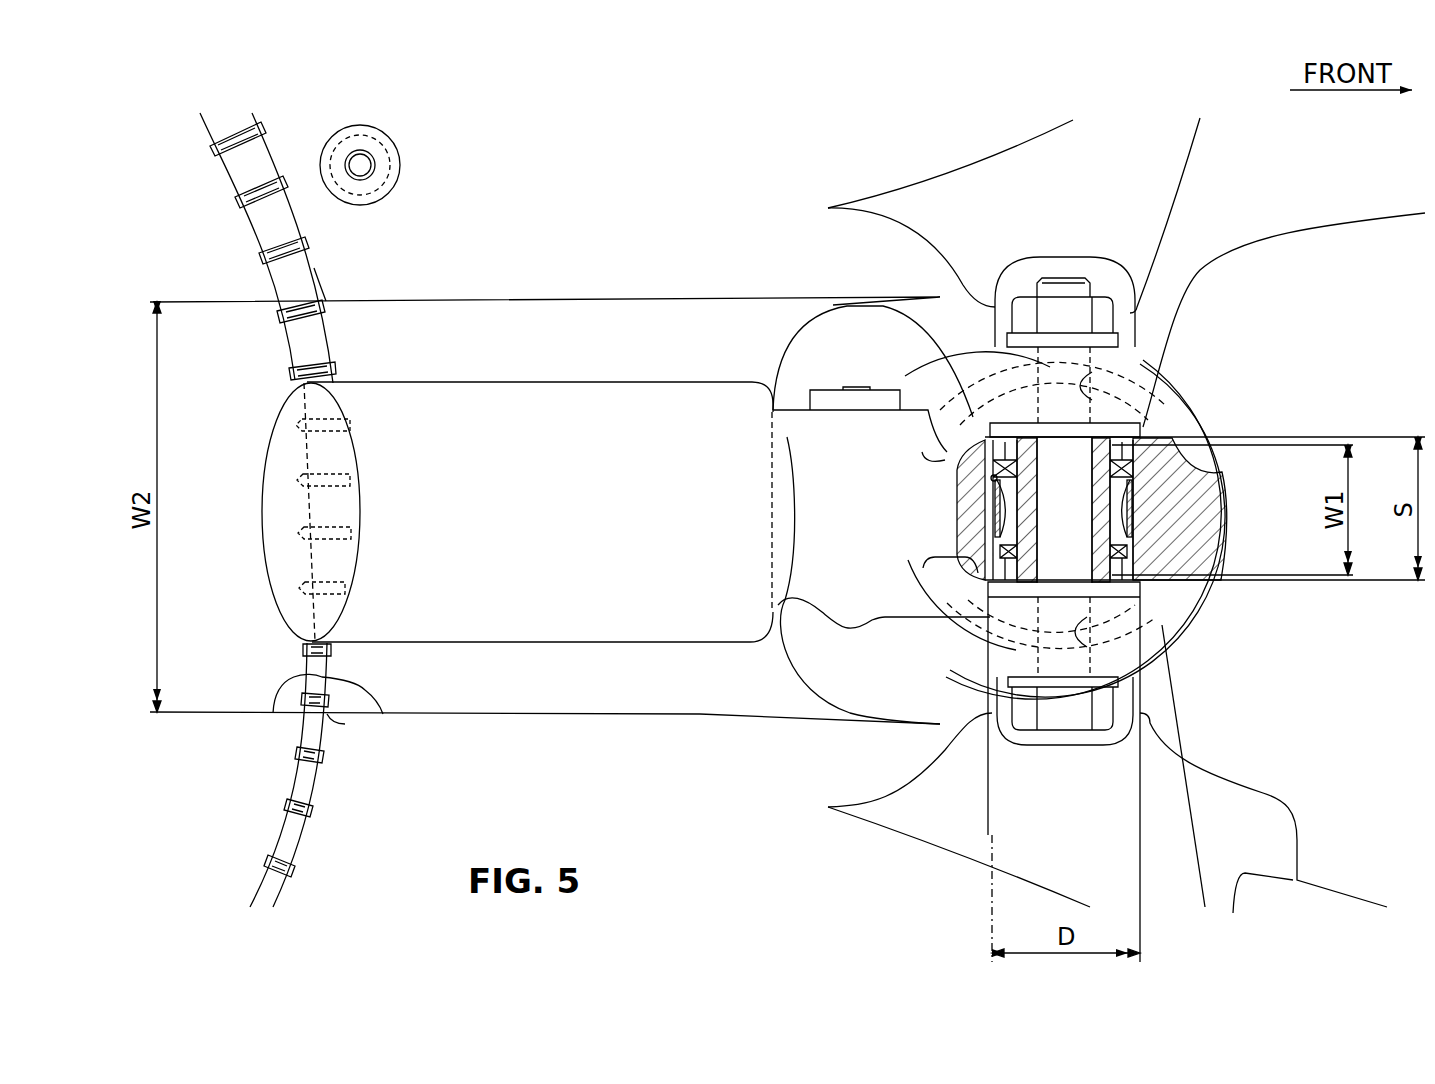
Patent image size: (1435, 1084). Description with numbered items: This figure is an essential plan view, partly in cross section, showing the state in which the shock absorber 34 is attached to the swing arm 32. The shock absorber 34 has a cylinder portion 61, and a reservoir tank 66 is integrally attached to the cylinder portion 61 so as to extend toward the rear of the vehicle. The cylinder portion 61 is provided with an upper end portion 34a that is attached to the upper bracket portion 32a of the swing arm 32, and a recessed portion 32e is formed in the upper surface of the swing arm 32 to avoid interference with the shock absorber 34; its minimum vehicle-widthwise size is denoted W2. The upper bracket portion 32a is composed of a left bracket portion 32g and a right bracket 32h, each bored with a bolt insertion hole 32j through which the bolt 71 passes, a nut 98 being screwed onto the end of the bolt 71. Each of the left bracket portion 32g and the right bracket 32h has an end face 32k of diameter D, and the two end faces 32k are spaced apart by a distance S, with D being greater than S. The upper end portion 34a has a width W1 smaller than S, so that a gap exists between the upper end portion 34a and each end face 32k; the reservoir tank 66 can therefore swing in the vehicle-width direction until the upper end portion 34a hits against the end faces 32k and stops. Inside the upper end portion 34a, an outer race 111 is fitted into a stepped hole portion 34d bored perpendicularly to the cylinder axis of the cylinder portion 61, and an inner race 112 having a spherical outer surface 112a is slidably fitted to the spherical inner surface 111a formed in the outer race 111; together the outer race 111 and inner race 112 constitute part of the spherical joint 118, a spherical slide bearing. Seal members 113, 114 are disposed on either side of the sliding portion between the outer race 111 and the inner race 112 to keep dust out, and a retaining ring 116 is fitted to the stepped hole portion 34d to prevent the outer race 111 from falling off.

The swing arm 32 is at (216, 188).
The upper bracket portion 32a is at (1226, 190).
The recessed portion 32e is at (275, 715).
The left bracket portion 32g is at (963, 200).
The right bracket 32h is at (920, 820).
The bolt insertion hole 32j is at (1100, 380).
The end face 32k is at (1140, 462).
The shock absorber 34 is at (1255, 472).
The upper end portion 34a is at (1235, 490).
The stepped hole portion 34d is at (1171, 514).
The cylinder portion 61 is at (1175, 627).
The reservoir tank 66 is at (432, 410).
The bolt 71 is at (1070, 715).
The nut 98 is at (1070, 315).
The outer race 111 is at (990, 512).
The spherical inner surface 111a is at (787, 437).
The inner race 112 is at (975, 540).
The spherical outer surface 112a is at (925, 565).
The seal member 113 is at (965, 410).
The seal member 114 is at (985, 590).
The retaining ring 116 is at (1145, 468).
The spherical joint 118 is at (1140, 478).